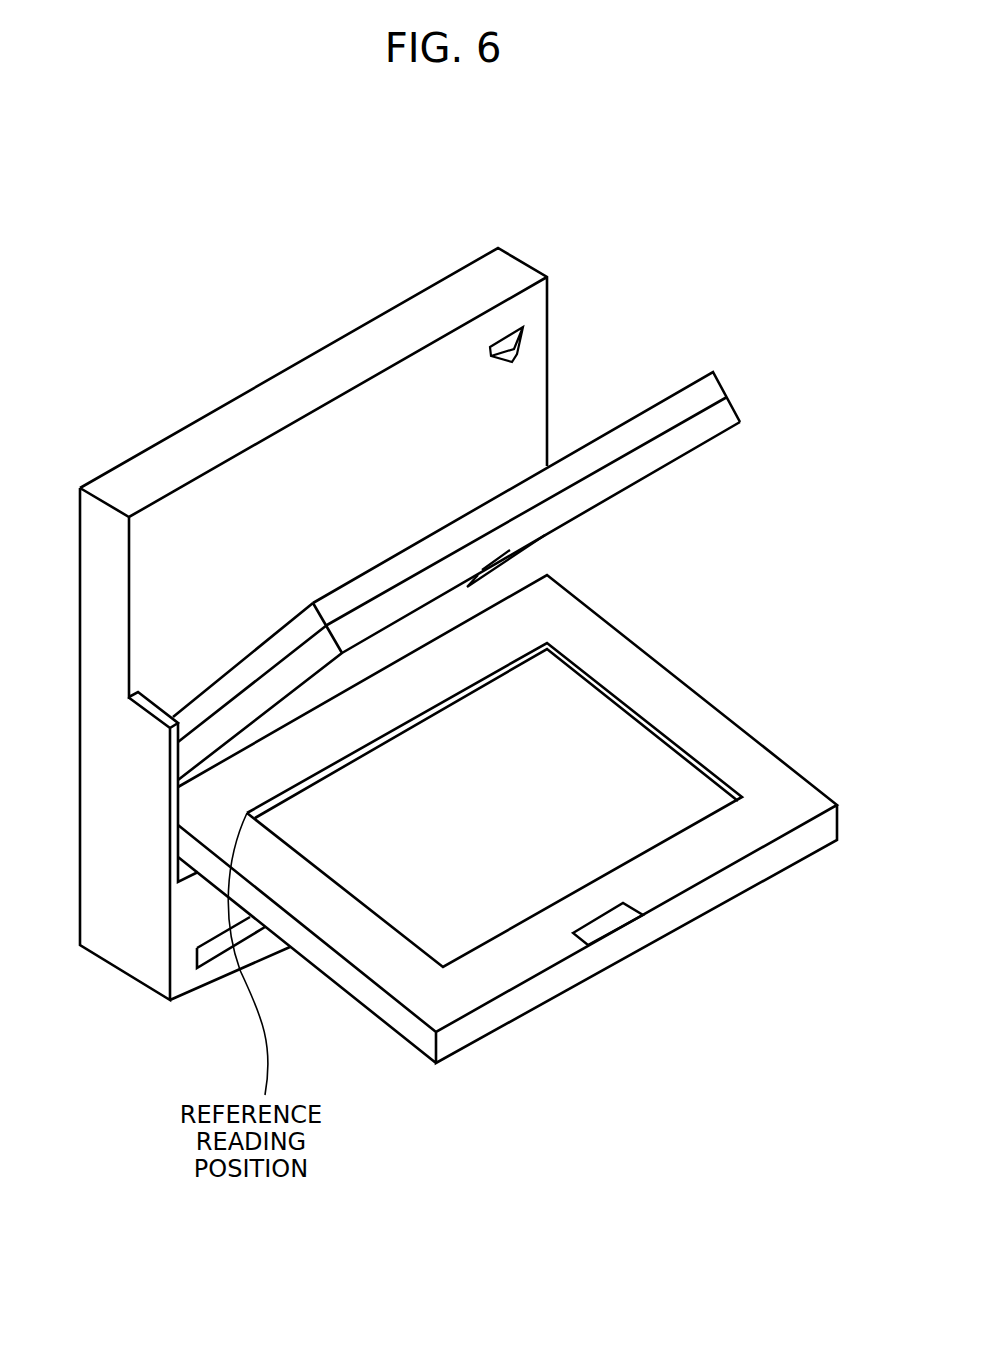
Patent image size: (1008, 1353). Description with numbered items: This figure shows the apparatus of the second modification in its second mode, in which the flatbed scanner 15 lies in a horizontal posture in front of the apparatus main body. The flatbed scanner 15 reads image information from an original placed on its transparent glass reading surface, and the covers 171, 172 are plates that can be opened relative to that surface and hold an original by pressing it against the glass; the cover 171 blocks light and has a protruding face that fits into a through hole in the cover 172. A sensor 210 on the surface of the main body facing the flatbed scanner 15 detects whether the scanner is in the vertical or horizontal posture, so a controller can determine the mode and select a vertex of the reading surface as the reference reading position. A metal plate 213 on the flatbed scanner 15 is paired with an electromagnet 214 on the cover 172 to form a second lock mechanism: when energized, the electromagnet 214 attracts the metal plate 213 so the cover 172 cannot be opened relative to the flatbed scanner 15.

The flatbed scanner 15 is at (420, 1033).
The cover 171 is at (714, 384).
The cover 172 is at (730, 417).
The sensor 210 is at (512, 342).
The metal plate 213 is at (602, 927).
The electromagnet 214 is at (507, 563).